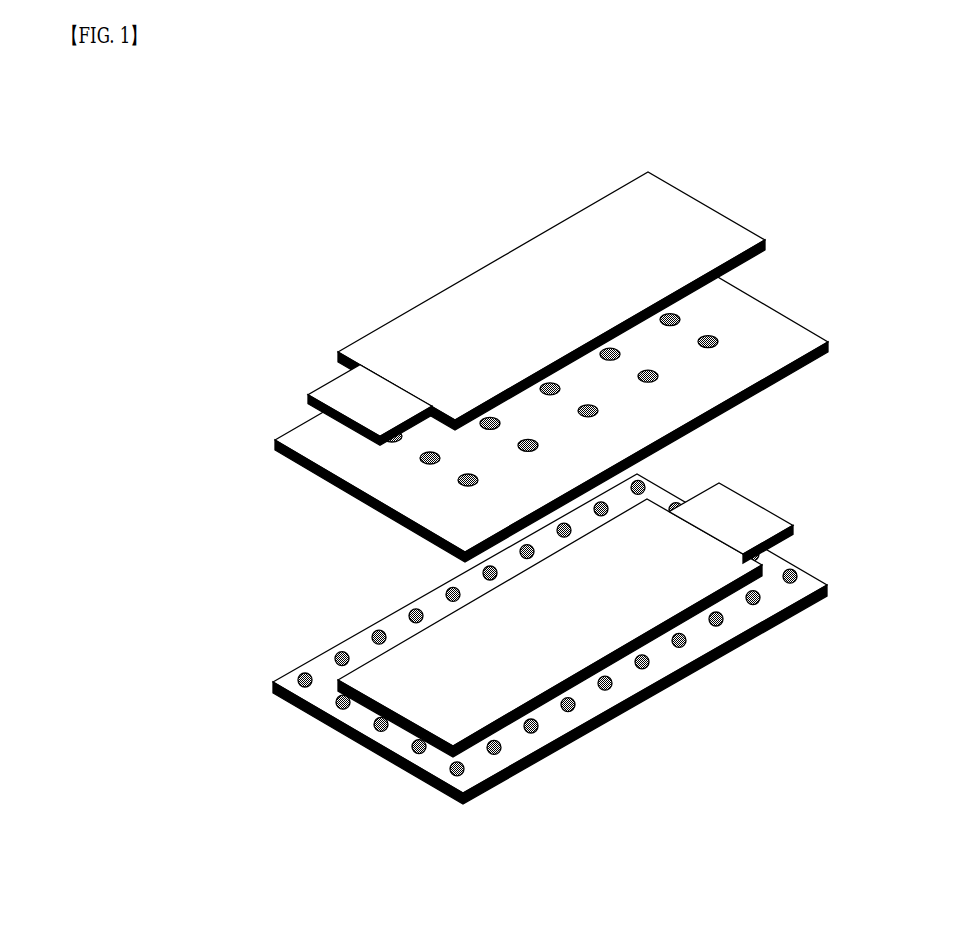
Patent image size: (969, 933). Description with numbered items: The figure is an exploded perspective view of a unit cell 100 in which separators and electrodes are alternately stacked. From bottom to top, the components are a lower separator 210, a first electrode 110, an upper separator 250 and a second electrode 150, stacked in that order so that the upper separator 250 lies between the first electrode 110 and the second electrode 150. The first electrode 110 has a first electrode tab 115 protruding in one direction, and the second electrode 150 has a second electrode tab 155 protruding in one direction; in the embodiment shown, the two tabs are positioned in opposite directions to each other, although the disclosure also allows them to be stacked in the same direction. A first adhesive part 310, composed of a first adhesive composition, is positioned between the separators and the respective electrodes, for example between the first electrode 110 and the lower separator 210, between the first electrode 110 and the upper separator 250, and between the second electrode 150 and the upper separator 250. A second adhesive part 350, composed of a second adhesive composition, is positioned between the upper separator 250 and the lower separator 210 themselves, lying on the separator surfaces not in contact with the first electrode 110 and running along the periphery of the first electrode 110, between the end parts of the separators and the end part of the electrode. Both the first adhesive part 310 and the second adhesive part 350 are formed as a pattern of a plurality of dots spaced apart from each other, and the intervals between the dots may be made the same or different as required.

The microfluidic cartridge / device assembly 100 is at (540, 103).
The first electrode 110 is at (422, 657).
The first electrode tab 115 is at (738, 515).
The second electrode 150 is at (413, 323).
The second electrode tab 155 is at (342, 390).
The lower separator 210 is at (360, 718).
The upper separator 250 is at (310, 440).
The first adhesive part 310 is at (726, 331).
The second adhesive part 350 is at (625, 686).